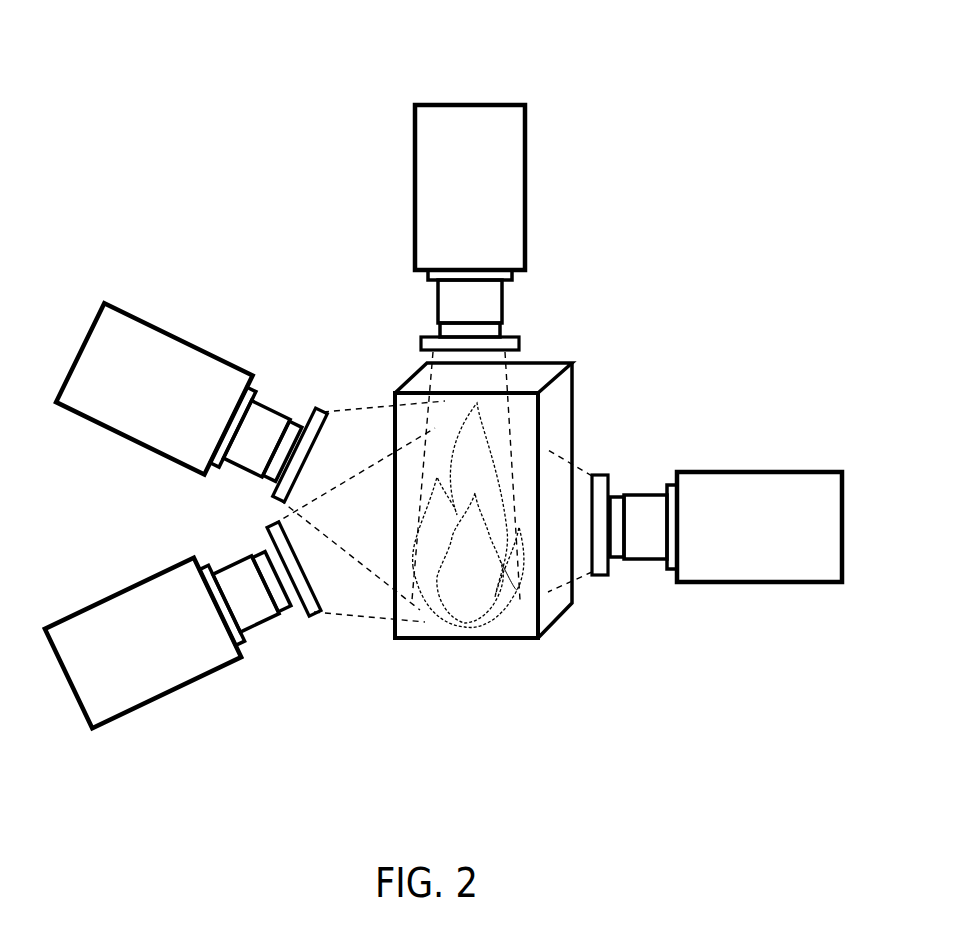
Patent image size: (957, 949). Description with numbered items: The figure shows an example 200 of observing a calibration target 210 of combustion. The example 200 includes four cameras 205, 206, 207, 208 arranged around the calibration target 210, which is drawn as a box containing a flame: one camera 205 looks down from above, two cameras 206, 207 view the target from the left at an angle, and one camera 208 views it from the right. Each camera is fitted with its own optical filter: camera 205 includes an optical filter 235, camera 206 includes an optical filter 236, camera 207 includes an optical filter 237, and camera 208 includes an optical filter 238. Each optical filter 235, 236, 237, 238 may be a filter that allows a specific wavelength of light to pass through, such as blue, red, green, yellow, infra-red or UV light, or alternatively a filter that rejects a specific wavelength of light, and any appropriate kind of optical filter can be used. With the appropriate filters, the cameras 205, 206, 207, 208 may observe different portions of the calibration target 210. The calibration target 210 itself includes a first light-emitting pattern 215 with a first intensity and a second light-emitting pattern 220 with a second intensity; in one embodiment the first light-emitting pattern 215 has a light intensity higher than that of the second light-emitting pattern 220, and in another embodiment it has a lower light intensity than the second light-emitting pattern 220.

The example 200 is at (153, 92).
The camera 205 is at (412, 143).
The camera 206 is at (93, 335).
The camera 207 is at (130, 587).
The camera 208 is at (782, 473).
The calibration target 210 is at (396, 638).
The first light-emitting pattern 215 is at (517, 590).
The second light-emitting pattern 220 is at (477, 603).
The optical filter 235 is at (433, 337).
The optical filter 236 is at (318, 407).
The optical filter 237 is at (272, 545).
The optical filter 238 is at (641, 496).